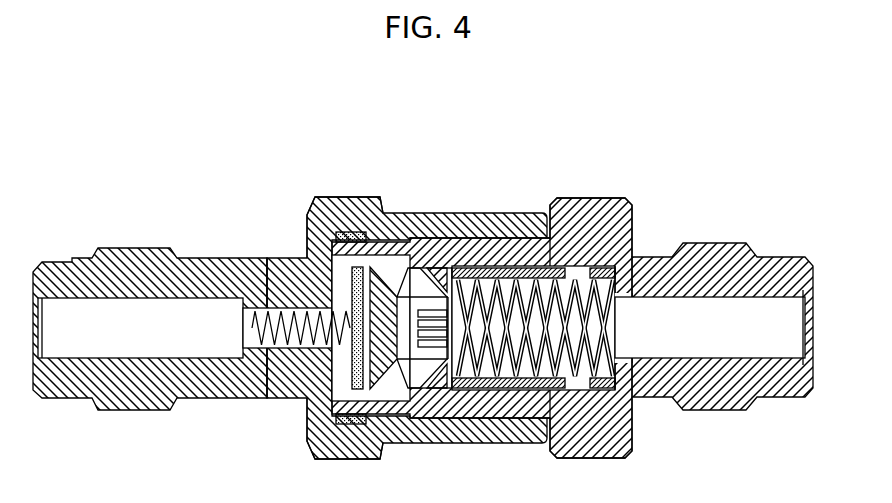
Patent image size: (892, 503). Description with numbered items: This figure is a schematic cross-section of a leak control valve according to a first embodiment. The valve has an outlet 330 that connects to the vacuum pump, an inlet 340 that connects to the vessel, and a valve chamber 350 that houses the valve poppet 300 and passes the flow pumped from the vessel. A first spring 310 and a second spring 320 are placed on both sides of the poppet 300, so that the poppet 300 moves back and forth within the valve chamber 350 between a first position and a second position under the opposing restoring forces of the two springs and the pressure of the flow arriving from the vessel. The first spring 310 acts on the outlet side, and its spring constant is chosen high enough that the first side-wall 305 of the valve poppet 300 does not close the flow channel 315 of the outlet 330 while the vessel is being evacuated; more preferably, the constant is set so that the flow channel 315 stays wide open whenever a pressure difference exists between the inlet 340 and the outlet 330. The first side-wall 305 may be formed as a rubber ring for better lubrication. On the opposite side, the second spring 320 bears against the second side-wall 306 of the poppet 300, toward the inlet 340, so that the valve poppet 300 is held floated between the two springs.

The valve poppet 300 is at (500, 213).
The first side-wall 305 is at (348, 459).
The second side-wall 306 is at (413, 345).
The first spring 310 is at (273, 258).
The flow channel 315 is at (298, 346).
The second spring 320 is at (602, 353).
The outlet 330 is at (54, 333).
The inlet 340 is at (712, 307).
The valve chamber 350 is at (607, 198).